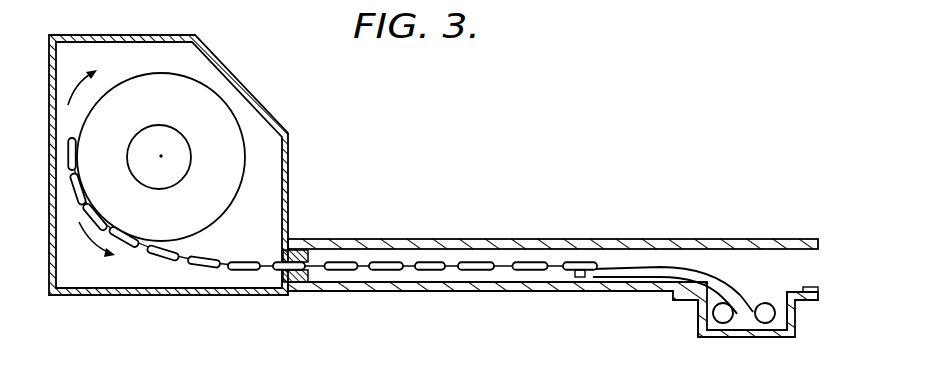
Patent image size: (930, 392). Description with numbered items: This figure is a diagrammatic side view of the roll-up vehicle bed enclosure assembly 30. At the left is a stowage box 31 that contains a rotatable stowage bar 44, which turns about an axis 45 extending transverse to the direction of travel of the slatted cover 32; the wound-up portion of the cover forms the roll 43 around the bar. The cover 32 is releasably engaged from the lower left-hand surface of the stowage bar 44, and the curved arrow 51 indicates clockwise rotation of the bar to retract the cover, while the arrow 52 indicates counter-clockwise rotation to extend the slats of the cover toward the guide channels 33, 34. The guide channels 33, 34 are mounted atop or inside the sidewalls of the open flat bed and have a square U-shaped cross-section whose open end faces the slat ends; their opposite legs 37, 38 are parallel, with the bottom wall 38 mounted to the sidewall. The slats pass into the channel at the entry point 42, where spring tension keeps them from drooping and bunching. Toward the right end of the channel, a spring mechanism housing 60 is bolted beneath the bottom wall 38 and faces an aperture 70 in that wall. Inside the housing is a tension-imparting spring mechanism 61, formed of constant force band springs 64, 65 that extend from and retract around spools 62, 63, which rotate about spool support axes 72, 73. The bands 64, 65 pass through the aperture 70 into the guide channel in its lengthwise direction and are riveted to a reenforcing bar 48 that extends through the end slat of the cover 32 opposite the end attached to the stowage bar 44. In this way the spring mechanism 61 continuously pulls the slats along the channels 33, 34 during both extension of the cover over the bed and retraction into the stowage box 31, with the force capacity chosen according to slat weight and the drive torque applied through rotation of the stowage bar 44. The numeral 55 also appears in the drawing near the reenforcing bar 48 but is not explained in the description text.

The enclosure assembly 30 is at (589, 139).
The stowage box 31 is at (262, 98).
The cover 32 is at (473, 262).
The guide channel 33 is at (553, 256).
The guide channel 34 is at (688, 244).
The leg of guide channel 37 is at (393, 239).
The bottom wall of guide channel 38 is at (553, 260).
The entry point 42 is at (299, 249).
The roll 43 is at (243, 174).
The rotatable stowage bar 44 is at (178, 130).
The axis 45 is at (161, 156).
The reenforcing bar 48 is at (578, 262).
The arrow 51 is at (76, 88).
The arrow 52 is at (78, 220).
The stop 55 is at (580, 278).
The spring mechanism housing 60 is at (758, 323).
The spring mechanism 61 is at (780, 322).
The spool 62 is at (723, 328).
The spool 63 is at (753, 334).
The band spring 64 is at (660, 278).
The band spring 65 is at (675, 267).
The aperture 70 is at (760, 285).
The spool support axis 72 is at (713, 313).
The spool support axis 73 is at (757, 304).